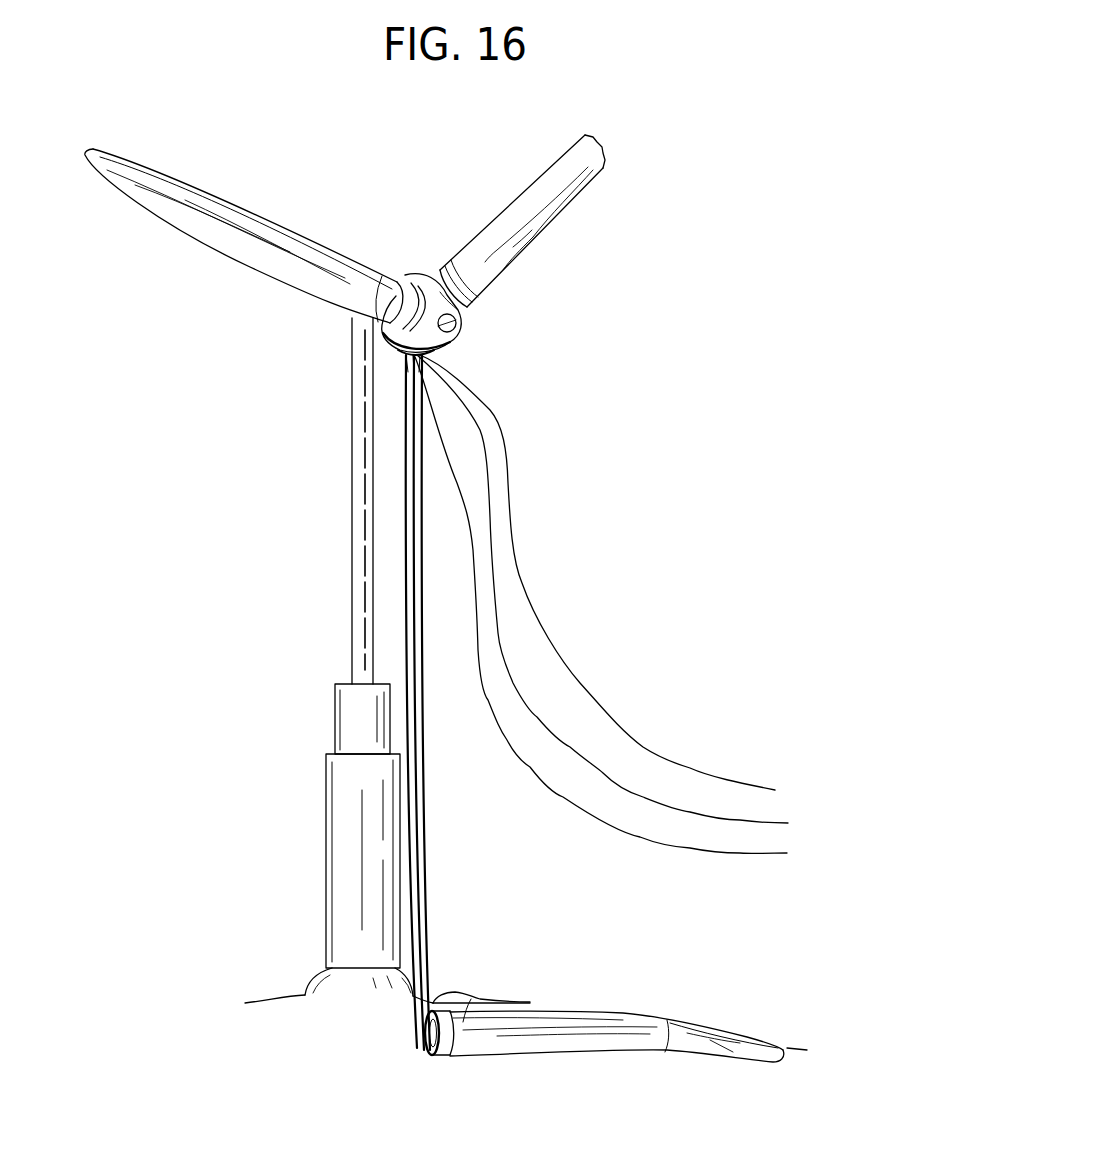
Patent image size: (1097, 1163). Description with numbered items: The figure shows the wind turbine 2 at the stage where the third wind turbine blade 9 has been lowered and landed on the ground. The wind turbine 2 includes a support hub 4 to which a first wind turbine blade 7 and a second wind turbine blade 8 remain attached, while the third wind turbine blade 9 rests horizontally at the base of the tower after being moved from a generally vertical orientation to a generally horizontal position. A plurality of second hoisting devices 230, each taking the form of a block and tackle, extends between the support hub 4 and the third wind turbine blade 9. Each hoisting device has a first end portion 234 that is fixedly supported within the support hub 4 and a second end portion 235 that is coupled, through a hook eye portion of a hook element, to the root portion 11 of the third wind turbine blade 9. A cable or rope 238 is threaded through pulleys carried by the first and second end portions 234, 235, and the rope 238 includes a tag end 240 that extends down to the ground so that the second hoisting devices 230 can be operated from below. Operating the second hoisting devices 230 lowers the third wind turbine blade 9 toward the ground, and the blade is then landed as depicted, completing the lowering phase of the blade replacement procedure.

The wind turbine 2 is at (176, 440).
The support hub 4 is at (412, 266).
The first wind turbine blade 7 is at (250, 266).
The second wind turbine blade 8 is at (560, 229).
The third wind turbine blade 9 is at (558, 998).
The root portion 11 is at (471, 999).
The second hoisting devices 230 is at (433, 728).
The first end portion 234 is at (437, 370).
The second end portion 235 is at (413, 1046).
The cable or rope 238 is at (640, 740).
The tag end 240 is at (688, 768).